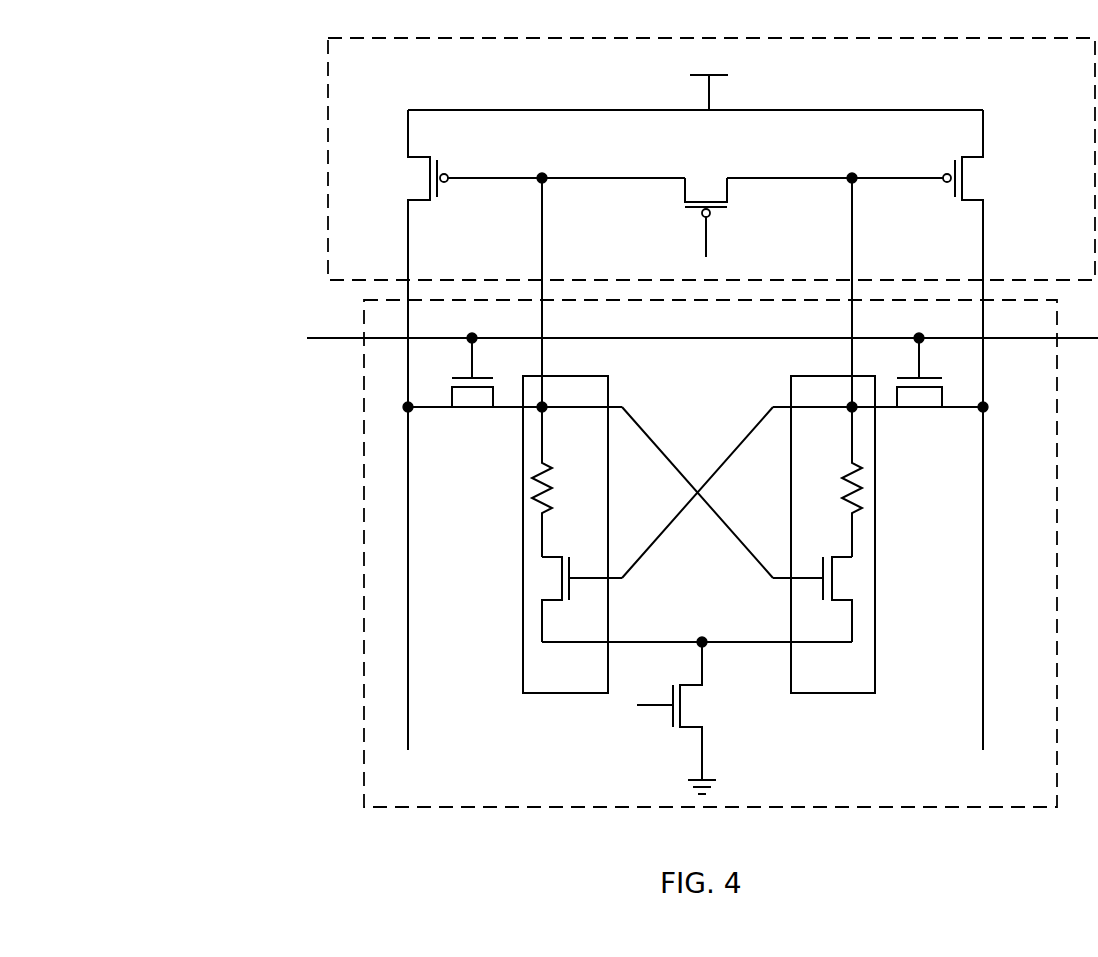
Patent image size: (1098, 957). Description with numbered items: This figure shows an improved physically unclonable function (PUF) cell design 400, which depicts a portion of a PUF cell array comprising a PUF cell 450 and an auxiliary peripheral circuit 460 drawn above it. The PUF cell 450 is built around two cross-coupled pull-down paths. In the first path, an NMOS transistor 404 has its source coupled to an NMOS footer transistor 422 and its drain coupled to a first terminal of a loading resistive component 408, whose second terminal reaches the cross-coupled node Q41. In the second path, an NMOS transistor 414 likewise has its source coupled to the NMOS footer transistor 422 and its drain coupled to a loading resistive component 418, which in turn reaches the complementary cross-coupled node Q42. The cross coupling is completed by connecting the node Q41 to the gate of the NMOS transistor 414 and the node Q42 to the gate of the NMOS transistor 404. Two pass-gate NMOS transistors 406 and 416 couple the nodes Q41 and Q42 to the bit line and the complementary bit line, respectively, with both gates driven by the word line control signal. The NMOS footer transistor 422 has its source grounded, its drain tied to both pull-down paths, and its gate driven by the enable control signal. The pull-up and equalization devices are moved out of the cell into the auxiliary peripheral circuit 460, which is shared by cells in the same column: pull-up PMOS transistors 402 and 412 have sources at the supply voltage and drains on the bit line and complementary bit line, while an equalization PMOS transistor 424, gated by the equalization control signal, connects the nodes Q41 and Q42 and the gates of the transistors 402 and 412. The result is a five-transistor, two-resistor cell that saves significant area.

The design 400 is at (250, 73).
The auxiliary peripheral circuit 460 is at (711, 222).
The PUF cell 450 is at (693, 553).
The pull-up PMOS transistor 402 is at (408, 182).
The pull-up PMOS transistor 412 is at (993, 182).
The equalization PMOS transistor 424 is at (711, 179).
The pass-gate NMOS transistor 406 is at (470, 413).
The pass-gate NMOS transistor 416 is at (919, 413).
The loading resistive component 408 is at (524, 492).
The loading resistive component 418 is at (868, 479).
The NMOS transistor 404 is at (537, 589).
The NMOS transistor 414 is at (857, 579).
The NMOS footer transistor 422 is at (708, 700).
The cross-coupled node Q41 is at (572, 391).
The complementary cross-coupled node Q42 is at (840, 392).